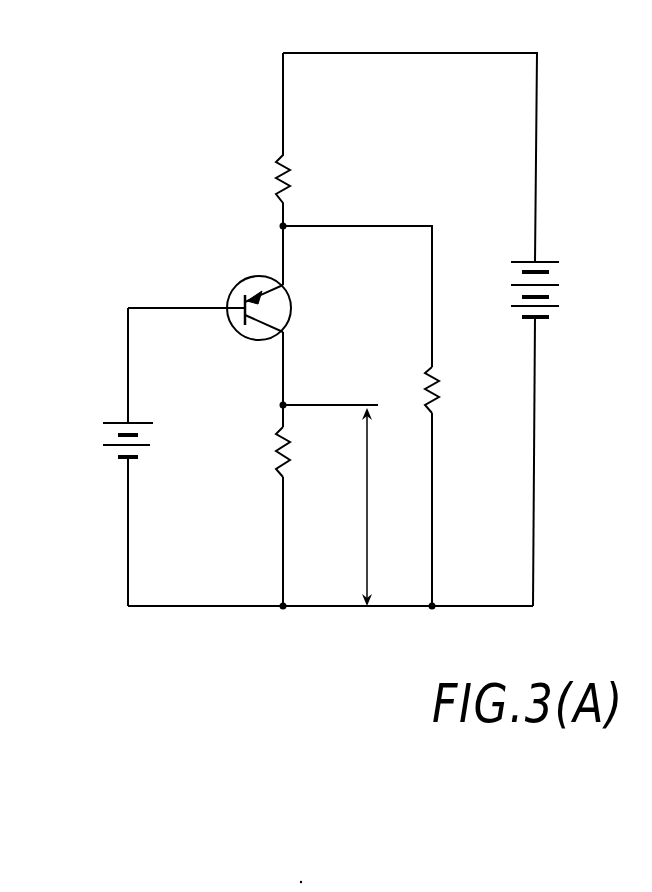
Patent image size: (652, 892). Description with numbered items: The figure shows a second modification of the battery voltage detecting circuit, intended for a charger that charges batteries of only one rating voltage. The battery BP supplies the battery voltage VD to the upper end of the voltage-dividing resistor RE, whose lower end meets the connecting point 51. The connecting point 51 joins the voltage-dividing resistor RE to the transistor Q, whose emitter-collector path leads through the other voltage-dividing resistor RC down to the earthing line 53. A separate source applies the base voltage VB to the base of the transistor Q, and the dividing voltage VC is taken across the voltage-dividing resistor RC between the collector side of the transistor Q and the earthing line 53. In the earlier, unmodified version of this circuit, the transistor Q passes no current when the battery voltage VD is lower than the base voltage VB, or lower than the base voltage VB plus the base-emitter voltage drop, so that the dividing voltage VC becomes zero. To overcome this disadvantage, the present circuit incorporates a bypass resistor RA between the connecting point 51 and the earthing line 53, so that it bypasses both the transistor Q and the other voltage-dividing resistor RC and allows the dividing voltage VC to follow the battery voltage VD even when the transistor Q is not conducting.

The connecting point 51 is at (285, 228).
The earthing line 53 is at (223, 607).
The transistor Q is at (252, 321).
The voltage-dividing resistor RE is at (303, 169).
The voltage-dividing resistor RC is at (301, 465).
The bypass resistor RA is at (452, 390).
The battery BP is at (551, 289).
The base voltage VB is at (130, 365).
The dividing voltage VC is at (386, 507).
The battery voltage VD is at (500, 36).